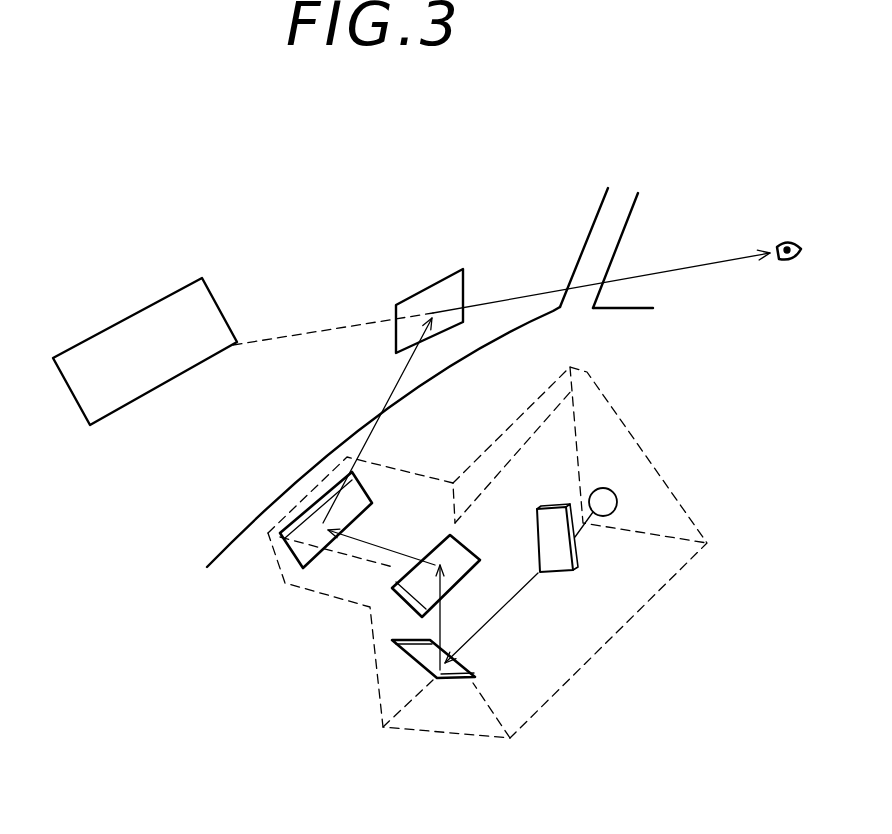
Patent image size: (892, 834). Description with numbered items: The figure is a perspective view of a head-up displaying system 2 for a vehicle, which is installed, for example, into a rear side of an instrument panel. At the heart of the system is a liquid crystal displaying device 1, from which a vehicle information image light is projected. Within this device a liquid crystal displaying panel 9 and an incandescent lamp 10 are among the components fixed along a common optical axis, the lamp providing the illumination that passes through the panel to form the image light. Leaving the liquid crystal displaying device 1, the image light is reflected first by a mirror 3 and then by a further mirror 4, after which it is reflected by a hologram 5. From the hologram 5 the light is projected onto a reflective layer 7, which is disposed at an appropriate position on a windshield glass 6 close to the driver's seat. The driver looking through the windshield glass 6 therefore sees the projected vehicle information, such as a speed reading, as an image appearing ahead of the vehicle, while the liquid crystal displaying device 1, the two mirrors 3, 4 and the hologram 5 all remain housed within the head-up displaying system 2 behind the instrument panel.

The liquid crystal displaying device 1 is at (593, 548).
The head-up displaying system 2 is at (500, 200).
The mirror 3 is at (413, 663).
The mirror 4 is at (400, 603).
The hologram 5 is at (283, 562).
The windshield glass 6 is at (242, 425).
The reflective layer 7 is at (445, 295).
The liquid crystal displaying panel 9 is at (580, 574).
The incandescent lamp 10 is at (617, 495).